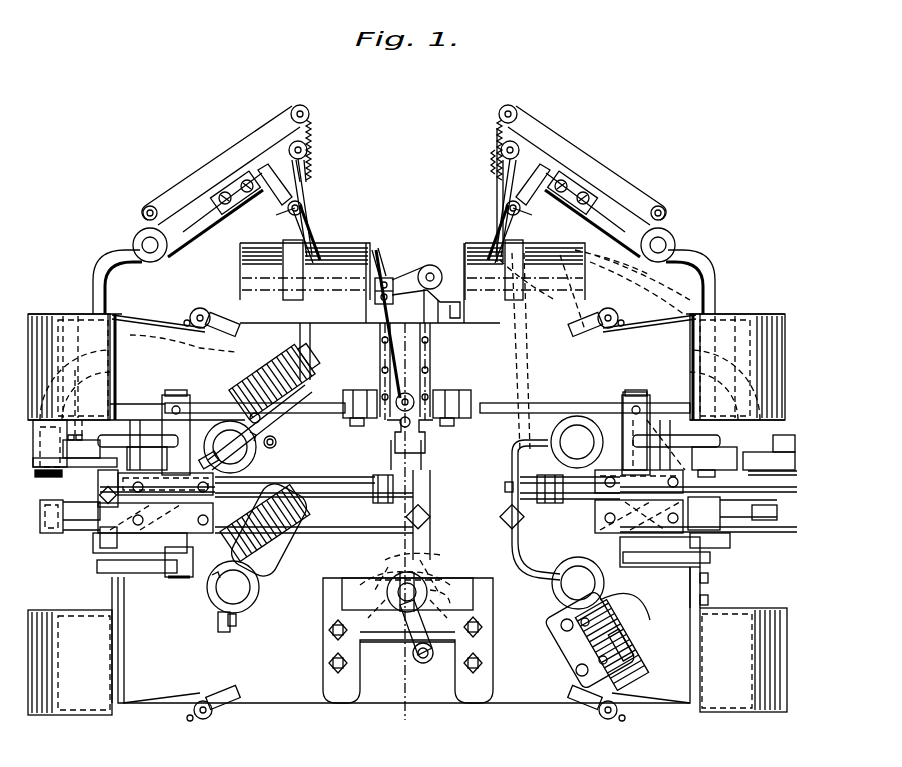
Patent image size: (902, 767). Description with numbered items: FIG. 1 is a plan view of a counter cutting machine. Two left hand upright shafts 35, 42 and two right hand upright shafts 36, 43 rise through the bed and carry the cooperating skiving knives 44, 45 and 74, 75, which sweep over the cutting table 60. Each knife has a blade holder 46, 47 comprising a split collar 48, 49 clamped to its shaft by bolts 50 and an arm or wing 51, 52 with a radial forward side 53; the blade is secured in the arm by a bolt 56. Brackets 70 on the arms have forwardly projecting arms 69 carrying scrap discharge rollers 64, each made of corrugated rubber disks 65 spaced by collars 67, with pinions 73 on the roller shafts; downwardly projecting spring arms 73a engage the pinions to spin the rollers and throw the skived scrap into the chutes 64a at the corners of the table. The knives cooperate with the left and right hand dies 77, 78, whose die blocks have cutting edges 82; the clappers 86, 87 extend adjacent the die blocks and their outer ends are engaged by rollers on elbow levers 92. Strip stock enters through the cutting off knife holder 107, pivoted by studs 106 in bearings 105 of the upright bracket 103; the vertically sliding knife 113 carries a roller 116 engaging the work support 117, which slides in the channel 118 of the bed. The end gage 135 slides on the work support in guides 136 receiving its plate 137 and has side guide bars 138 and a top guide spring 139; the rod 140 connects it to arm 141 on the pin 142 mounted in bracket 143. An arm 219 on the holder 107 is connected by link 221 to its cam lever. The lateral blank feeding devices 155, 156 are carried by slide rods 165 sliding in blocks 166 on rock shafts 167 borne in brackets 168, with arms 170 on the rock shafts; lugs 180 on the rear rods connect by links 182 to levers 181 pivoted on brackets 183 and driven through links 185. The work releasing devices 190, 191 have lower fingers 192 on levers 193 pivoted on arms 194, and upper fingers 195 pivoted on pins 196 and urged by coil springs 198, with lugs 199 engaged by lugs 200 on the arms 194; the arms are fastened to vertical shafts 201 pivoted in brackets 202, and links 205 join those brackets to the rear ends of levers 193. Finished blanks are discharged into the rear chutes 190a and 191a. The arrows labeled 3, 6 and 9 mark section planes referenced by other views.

The section line 3 is at (501, 295).
The section line 6 is at (407, 314).
The section line 9 is at (489, 505).
The upright shaft 35 is at (233, 587).
The upright shaft 36 is at (578, 583).
The upright shaft 42 is at (230, 447).
The upright shaft 43 is at (577, 442).
The skiving knife 44 is at (170, 580).
The skiving knife 45 is at (285, 449).
The knife blade holder 46 is at (200, 592).
The knife blade holder 47 is at (300, 442).
The split collar 48 is at (245, 614).
The split collar 49 is at (215, 402).
The bolts 50 is at (232, 634).
The arm or wing 51 is at (190, 582).
The arm or wing 52 is at (362, 417).
The radial forward side 53 is at (310, 362).
The bolts 56 is at (576, 673).
The cutting table 60 is at (705, 318).
The scrap discharge rollers 64 is at (265, 362).
The chutes 64a is at (32, 300).
The disks 65 is at (625, 617).
The collars 67 is at (632, 642).
The forwardly projecting arms 69 is at (560, 630).
The brackets 70 is at (585, 647).
The pinions 73 is at (282, 370).
The spring arms 73a is at (190, 318).
The skiving knife 74 is at (604, 592).
The skiving knife 75 is at (660, 432).
The left hand die 77 is at (298, 557).
The right hand die 78 is at (505, 542).
The cutting edges 82 is at (512, 572).
The left hand clapper 86 is at (255, 429).
The right hand clapper 87 is at (520, 587).
The elbow levers 92 is at (45, 533).
The upright bracket 103 is at (342, 600).
The bearings 105 is at (330, 630).
The studs 106 is at (400, 642).
The cutting off knife holder 107 is at (380, 642).
The knife 113 is at (395, 595).
The roller 116 is at (395, 562).
The work support 117 is at (445, 558).
The elongated recess or channel 118 is at (432, 458).
The end gage 135 is at (410, 402).
The guides 136 is at (378, 352).
The plate 137 is at (380, 370).
The side guide bars 138 is at (388, 442).
The top guide spring 139 is at (407, 464).
The rod 140 is at (380, 256).
The arm 141 is at (403, 273).
The vertical pin 142 is at (432, 265).
The bracket 143 is at (542, 351).
The left hand lateral blank feeding device 155 is at (395, 574).
The right hand lateral blank feeding device 156 is at (530, 432).
The slide rods 165 is at (355, 486).
The blocks 166 is at (92, 545).
The rock shafts 167 is at (178, 392).
The brackets 168 is at (138, 418).
The arms 170 is at (225, 400).
The lugs 180 is at (395, 489).
The levers 181 is at (33, 466).
The links 182 is at (373, 484).
The brackets 183 is at (85, 325).
The links 185 is at (80, 432).
The left hand work releasing device 190 is at (306, 176).
The chute 190a is at (365, 247).
The right hand work releasing device 191 is at (494, 177).
The chute 191a is at (670, 262).
The lower work engaging fingers 192 is at (282, 268).
The levers 193 is at (292, 240).
The arms 194 is at (182, 222).
The upper work engaging fingers 195 is at (312, 232).
The pins 196 is at (305, 194).
The coil springs 198 is at (305, 148).
The lugs 199 is at (277, 215).
The lugs 200 is at (265, 165).
The vertical shafts 201 is at (143, 240).
The brackets 202 is at (108, 257).
The links 205 is at (237, 160).
The arm 219 is at (420, 667).
The link 221 is at (455, 657).